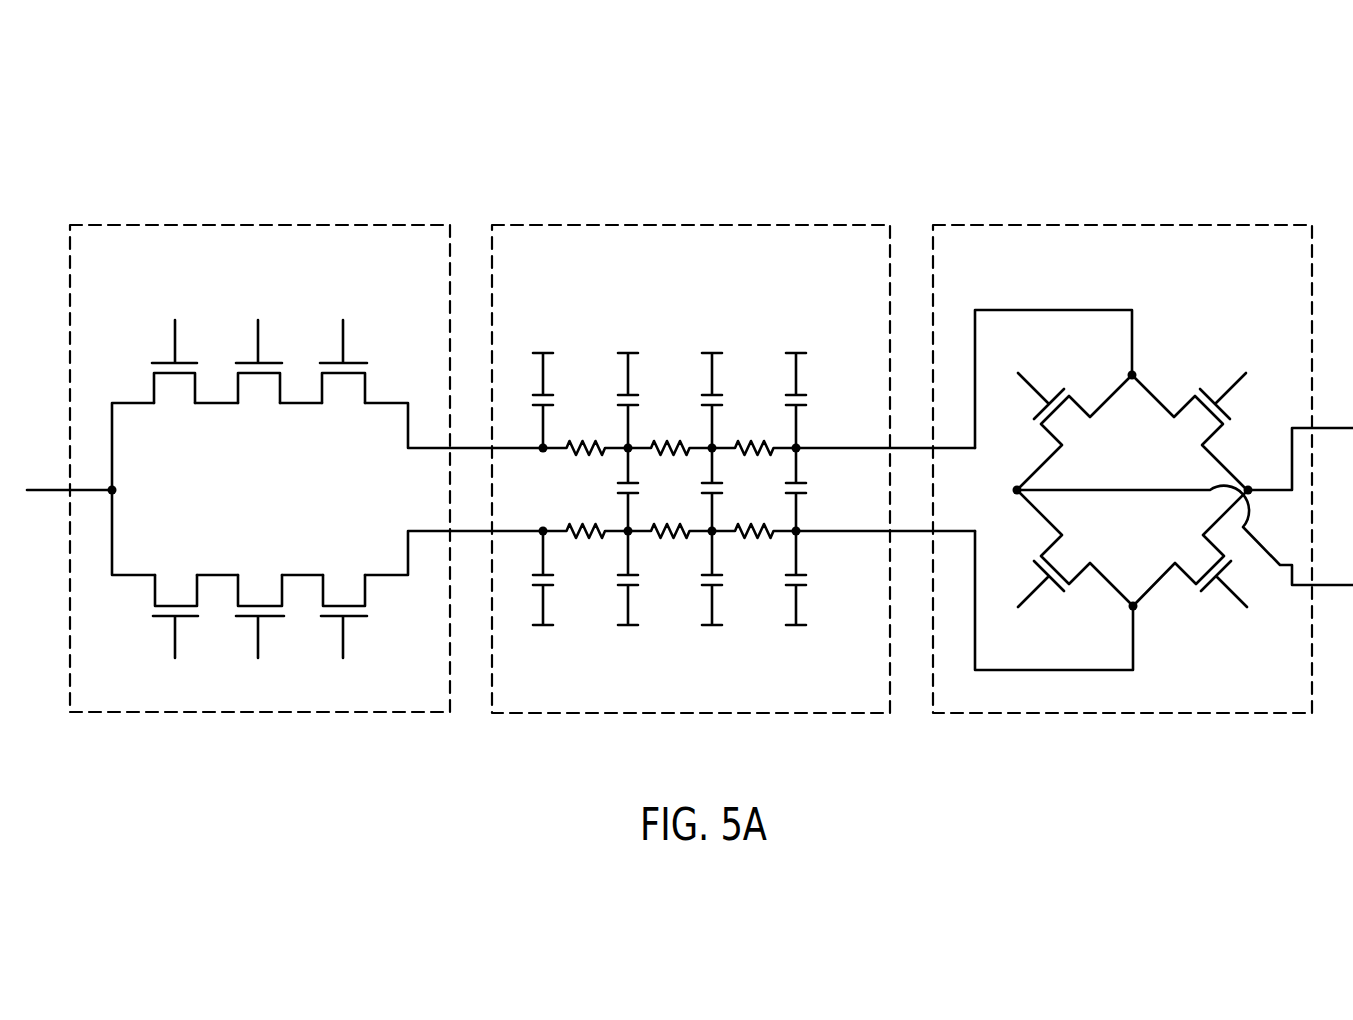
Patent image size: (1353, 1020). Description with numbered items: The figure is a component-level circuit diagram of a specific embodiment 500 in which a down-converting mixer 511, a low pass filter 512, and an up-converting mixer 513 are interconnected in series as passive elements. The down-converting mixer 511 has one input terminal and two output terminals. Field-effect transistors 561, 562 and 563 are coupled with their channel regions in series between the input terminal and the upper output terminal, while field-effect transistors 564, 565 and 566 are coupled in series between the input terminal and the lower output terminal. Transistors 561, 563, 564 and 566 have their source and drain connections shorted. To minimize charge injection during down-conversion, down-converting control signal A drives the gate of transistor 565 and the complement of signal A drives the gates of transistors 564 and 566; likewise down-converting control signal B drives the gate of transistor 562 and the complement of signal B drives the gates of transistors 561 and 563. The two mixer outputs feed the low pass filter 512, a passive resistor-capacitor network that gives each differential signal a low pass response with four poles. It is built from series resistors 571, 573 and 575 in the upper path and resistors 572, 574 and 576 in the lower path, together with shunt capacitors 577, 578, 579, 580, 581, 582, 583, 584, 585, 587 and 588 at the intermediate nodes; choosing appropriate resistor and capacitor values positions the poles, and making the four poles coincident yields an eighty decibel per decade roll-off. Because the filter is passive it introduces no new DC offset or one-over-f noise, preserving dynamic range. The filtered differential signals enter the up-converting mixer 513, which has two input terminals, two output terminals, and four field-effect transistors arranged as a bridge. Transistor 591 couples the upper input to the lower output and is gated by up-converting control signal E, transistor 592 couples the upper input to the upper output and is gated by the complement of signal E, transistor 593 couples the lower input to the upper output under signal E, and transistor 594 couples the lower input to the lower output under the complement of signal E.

The specific embodiment 500 is at (830, 108).
The down-converting mixer 511 is at (306, 468).
The low pass filter 512 is at (733, 469).
The up-converting mixer 513 is at (1143, 469).
The field-effect transistor 561 is at (177, 398).
The field-effect transistor 562 is at (260, 400).
The field-effect transistor 563 is at (344, 396).
The field-effect transistor 564 is at (177, 585).
The field-effect transistor 565 is at (258, 577).
The field-effect transistor 566 is at (345, 585).
The resistor 571 is at (604, 432).
The resistor 572 is at (604, 515).
The resistor 573 is at (687, 432).
The resistor 574 is at (687, 515).
The resistor 575 is at (772, 432).
The resistor 576 is at (772, 515).
The capacitor 577 is at (641, 395).
The capacitor 578 is at (641, 490).
The capacitor 579 is at (641, 583).
The capacitor 580 is at (725, 395).
The capacitor 581 is at (725, 490).
The capacitor 582 is at (725, 583).
The capacitor 583 is at (809, 395).
The capacitor 584 is at (809, 490).
The capacitor 585 is at (809, 583).
The capacitor 587 is at (557, 395).
The capacitor 588 is at (557, 583).
The field-effect transistor 591 is at (1065, 423).
The field-effect transistor 592 is at (1197, 427).
The field-effect transistor 593 is at (1200, 558).
The field-effect transistor 594 is at (1065, 560).